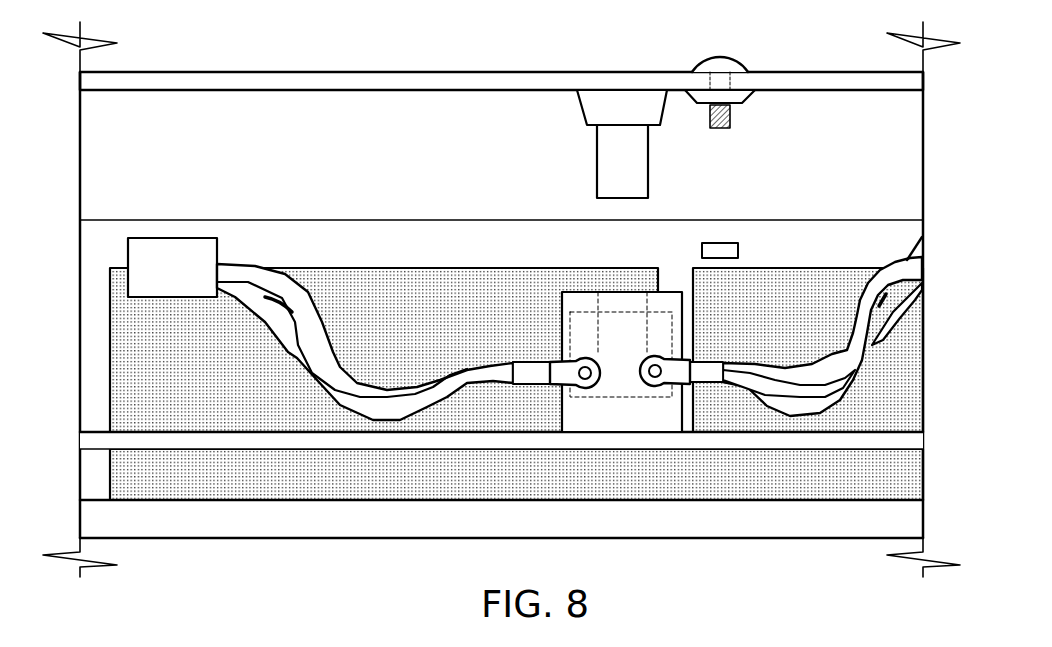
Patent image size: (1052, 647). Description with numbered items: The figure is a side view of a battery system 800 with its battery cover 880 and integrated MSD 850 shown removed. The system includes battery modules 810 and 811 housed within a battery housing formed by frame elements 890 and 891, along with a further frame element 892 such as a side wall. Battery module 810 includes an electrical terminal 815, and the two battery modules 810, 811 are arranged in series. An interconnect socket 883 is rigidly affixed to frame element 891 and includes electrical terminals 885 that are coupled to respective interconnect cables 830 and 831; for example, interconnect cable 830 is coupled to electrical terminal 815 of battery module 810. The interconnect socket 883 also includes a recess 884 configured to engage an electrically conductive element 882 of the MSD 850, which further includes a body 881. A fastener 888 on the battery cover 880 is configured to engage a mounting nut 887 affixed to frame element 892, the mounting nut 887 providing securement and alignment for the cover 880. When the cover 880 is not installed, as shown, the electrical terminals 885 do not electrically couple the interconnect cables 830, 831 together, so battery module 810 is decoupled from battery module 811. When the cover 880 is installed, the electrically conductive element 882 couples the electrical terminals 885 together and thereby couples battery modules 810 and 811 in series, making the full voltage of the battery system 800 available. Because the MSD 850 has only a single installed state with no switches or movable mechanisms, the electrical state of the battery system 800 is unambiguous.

The battery system 800 is at (214, 57).
The battery module 810 is at (425, 328).
The battery module 811 is at (760, 323).
The electrical terminal 815 is at (154, 282).
The interconnect cable 830 is at (390, 372).
The interconnect cable 831 is at (897, 257).
The MSD 850 is at (600, 144).
The battery cover 880 is at (412, 60).
The body 881 is at (604, 117).
The electrically conductive element 882 is at (649, 160).
The interconnect socket 883 is at (604, 425).
The recess 884 is at (619, 288).
The electrical terminals 885 is at (585, 333).
The mounting nut 887 is at (740, 247).
The fastener 888 is at (731, 117).
The frame element 890 is at (484, 532).
The frame element 891 is at (297, 455).
The frame element 892 is at (304, 257).